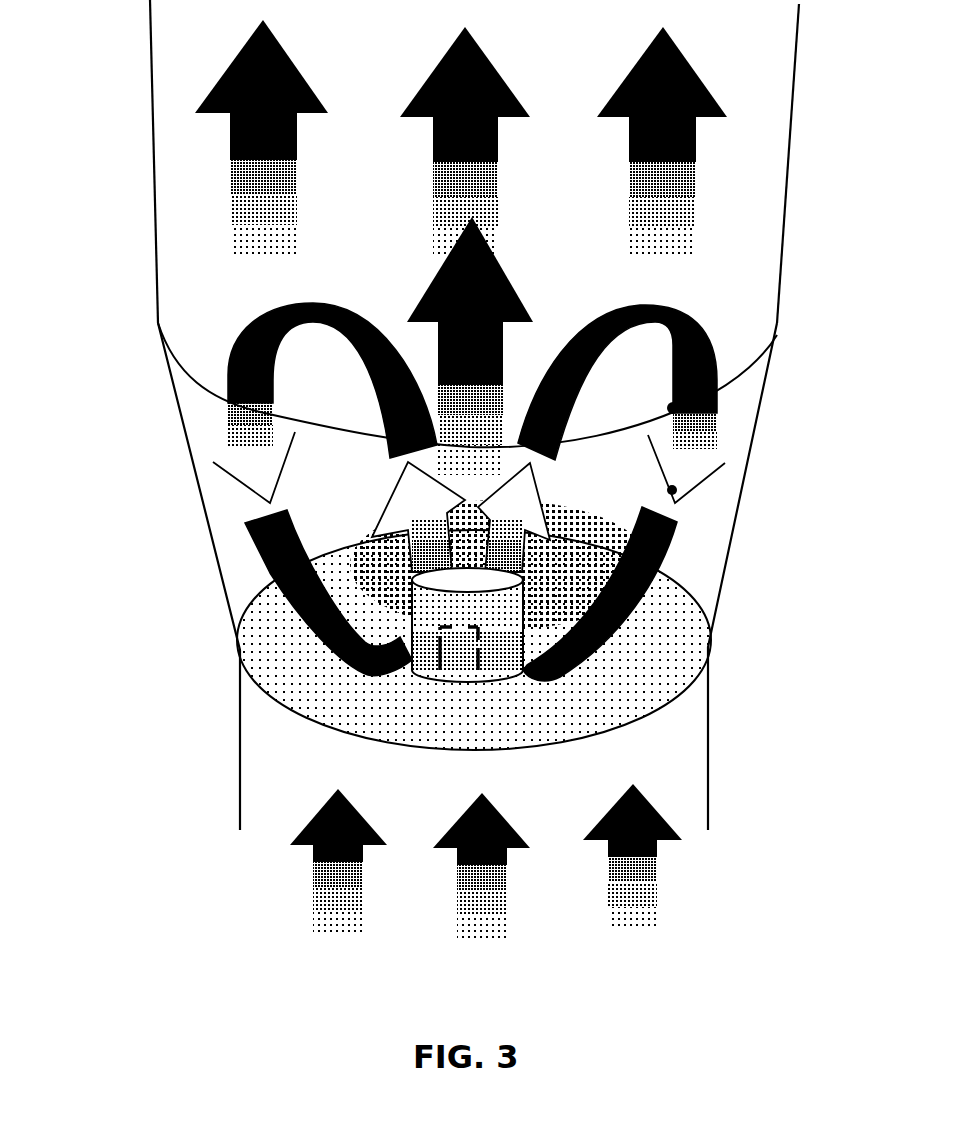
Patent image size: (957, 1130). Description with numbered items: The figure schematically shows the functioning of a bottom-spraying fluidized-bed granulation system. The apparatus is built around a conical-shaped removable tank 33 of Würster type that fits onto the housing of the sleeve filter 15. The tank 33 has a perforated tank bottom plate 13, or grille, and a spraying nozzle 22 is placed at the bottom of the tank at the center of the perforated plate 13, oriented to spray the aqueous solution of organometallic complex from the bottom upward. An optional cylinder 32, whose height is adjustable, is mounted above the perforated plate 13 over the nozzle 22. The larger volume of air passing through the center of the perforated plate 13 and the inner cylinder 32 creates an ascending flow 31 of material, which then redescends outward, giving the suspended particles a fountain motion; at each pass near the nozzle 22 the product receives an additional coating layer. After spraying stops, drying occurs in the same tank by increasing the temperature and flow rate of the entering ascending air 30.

The perforated plate 13 is at (683, 663).
The sleeve filter 15 is at (167, 113).
The spraying nozzle 22 is at (458, 672).
The ascending air 30 is at (337, 910).
The ascending flow 31 is at (363, 363).
The cylinder 32 is at (410, 670).
The removable tank 33 is at (212, 538).